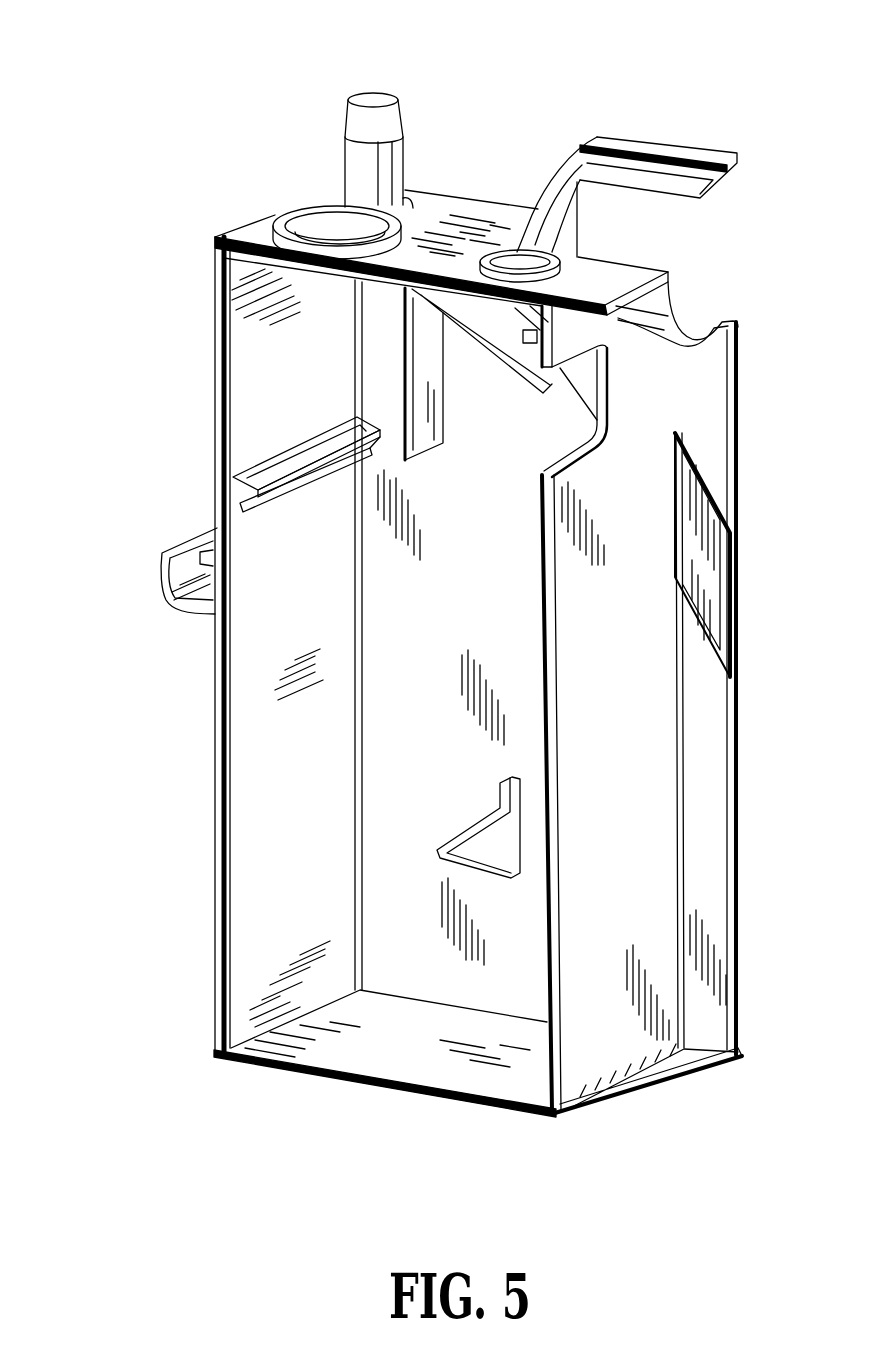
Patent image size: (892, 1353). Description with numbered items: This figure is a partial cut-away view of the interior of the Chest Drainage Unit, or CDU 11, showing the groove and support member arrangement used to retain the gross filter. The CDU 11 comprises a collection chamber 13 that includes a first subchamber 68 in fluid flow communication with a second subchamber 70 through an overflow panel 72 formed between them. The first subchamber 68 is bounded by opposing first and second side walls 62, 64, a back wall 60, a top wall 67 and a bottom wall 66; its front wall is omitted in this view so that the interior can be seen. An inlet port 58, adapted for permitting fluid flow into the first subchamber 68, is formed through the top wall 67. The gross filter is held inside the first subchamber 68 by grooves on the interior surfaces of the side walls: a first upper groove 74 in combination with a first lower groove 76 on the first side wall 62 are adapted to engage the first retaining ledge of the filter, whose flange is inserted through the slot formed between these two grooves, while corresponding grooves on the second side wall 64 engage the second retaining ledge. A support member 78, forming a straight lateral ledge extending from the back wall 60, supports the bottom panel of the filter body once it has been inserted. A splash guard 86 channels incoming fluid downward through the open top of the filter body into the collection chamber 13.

The CDU 11 is at (465, 599).
The collection chamber 13 is at (400, 872).
The inlet port 58 is at (371, 98).
The back wall 60 is at (472, 619).
The first side wall 62 is at (222, 713).
The second side wall 64 is at (693, 697).
The bottom wall 66 is at (425, 1064).
The top wall 67 is at (447, 213).
The first subchamber 68 is at (275, 840).
The second subchamber 70 is at (620, 673).
The overflow panel 72 is at (565, 424).
The first upper groove 74 is at (262, 478).
The first lower groove 76 is at (303, 490).
The support member 78 is at (490, 848).
The splash guard 86 is at (422, 352).